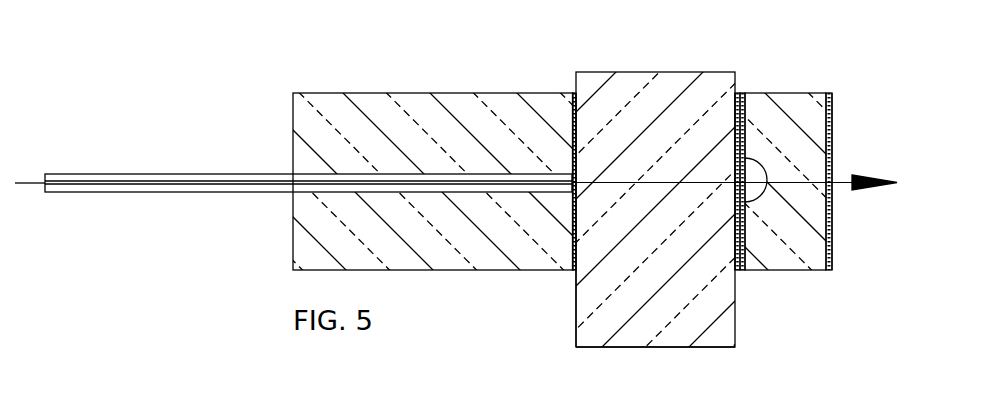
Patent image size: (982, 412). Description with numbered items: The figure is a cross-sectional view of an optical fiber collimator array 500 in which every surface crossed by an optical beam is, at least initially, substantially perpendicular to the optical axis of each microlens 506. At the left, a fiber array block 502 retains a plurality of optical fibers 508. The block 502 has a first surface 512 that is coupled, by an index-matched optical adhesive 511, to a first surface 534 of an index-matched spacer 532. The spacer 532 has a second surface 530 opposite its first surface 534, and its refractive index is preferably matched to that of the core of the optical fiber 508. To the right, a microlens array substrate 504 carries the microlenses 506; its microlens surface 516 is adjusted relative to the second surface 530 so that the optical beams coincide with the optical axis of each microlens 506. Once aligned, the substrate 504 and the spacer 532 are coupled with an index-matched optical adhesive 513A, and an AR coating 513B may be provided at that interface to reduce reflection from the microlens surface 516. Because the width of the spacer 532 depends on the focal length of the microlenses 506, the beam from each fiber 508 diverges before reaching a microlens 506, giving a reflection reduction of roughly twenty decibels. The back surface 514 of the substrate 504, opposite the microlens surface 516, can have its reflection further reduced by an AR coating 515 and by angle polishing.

The optical fiber collimator array 500 is at (228, 107).
The fiber array block 502 is at (328, 92).
The microlens array substrate 504 is at (785, 94).
The microlens 506 is at (768, 165).
The optical fiber 508 is at (158, 193).
The index-matched optical adhesive 511 is at (574, 92).
The first surface of the fiber array block 512 is at (583, 230).
The index-matched optical adhesive 513A is at (737, 94).
The AR coating 513B is at (745, 93).
The back surface 514 is at (834, 244).
The coating layer 515 is at (827, 93).
The microlens surface 516 is at (734, 222).
The second surface of the spacer 530 is at (742, 331).
The index-matched spacer 532 is at (695, 348).
The first surface of the spacer 534 is at (577, 308).